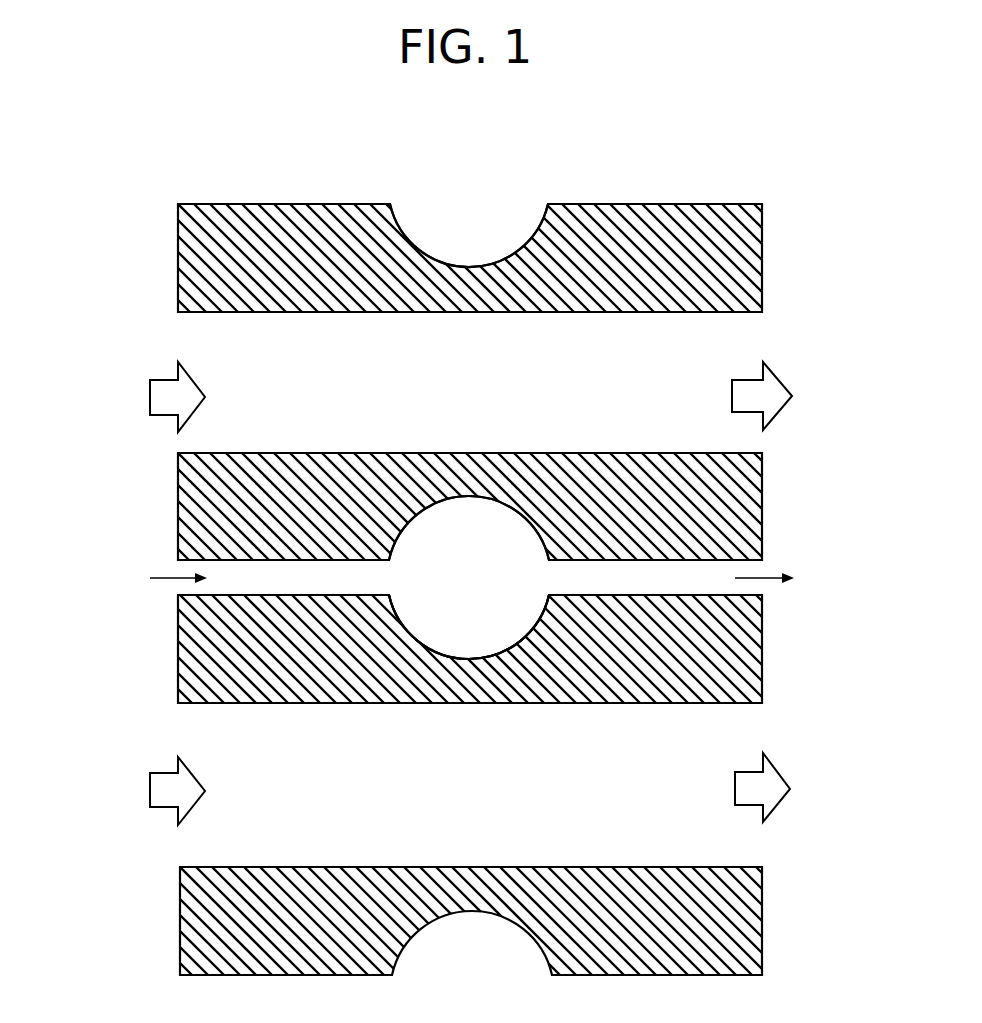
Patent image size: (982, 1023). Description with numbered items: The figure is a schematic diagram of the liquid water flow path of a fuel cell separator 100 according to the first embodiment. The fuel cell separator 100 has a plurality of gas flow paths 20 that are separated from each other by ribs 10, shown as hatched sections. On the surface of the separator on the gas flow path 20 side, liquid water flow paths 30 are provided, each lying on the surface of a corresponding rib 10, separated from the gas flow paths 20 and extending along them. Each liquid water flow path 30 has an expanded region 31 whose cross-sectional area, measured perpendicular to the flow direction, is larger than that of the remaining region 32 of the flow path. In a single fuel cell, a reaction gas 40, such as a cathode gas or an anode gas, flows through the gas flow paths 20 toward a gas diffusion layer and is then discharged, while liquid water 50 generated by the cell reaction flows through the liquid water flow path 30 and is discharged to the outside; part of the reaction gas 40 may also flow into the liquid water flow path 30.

The rib 10 is at (740, 260).
The gas flow path 20 is at (735, 326).
The liquid water flow path 30 is at (575, 493).
The expanded region 31 is at (513, 575).
The remaining region 32 is at (590, 577).
The reaction gas 40 is at (163, 392).
The liquid water 50 is at (165, 578).
The fuel cell separator 100 is at (163, 505).